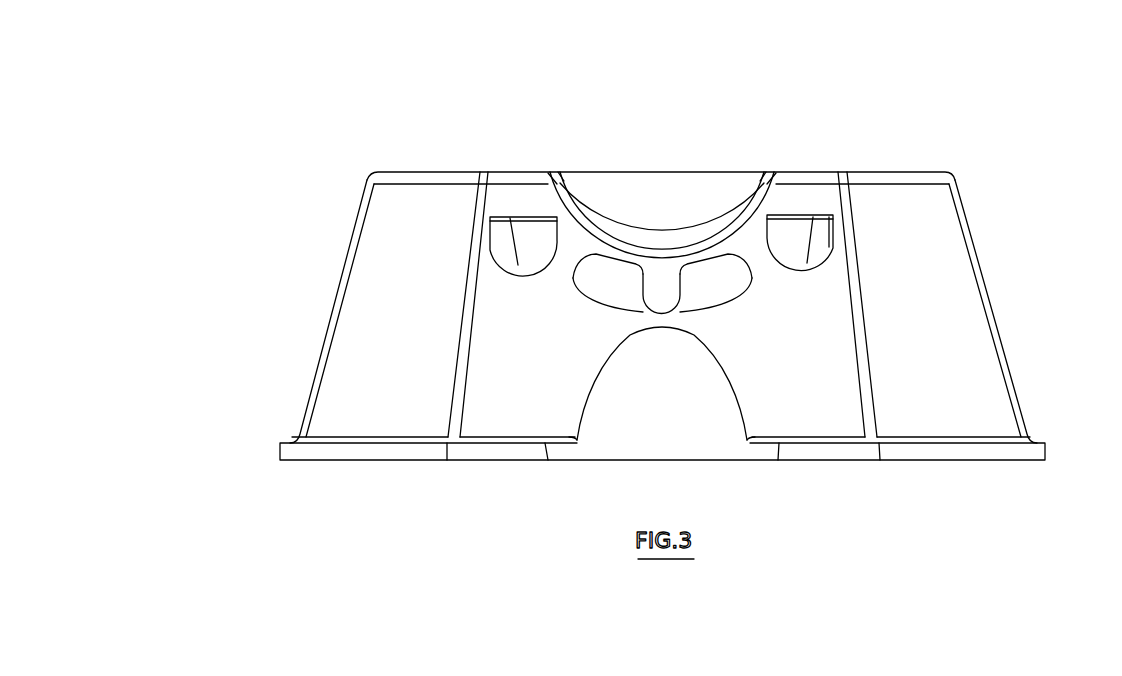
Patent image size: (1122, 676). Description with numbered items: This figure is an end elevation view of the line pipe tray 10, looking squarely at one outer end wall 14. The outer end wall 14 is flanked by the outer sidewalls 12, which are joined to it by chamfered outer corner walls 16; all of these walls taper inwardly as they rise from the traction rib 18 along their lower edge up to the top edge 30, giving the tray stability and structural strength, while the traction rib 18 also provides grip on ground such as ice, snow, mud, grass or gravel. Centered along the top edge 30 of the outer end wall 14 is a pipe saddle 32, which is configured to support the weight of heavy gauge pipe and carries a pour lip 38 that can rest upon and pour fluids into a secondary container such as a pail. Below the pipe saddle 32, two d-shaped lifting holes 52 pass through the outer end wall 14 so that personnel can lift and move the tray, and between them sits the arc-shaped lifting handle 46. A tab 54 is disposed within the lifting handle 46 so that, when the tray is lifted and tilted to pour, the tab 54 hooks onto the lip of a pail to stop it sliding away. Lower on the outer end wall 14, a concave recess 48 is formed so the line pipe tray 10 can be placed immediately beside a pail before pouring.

The line pipe tray 10 is at (527, 45).
The outer sidewall 12 is at (313, 337).
The outer end wall 14 is at (818, 412).
The outer corner wall 16 is at (363, 415).
The traction rib 18 is at (1030, 452).
The top edge 30 is at (395, 165).
The pipe saddle 32 is at (657, 172).
The pour lip 38 is at (740, 227).
The lifting handle 46 is at (712, 300).
The recess 48 is at (640, 437).
The lifting hole 52 is at (530, 240).
The tab 54 is at (660, 288).